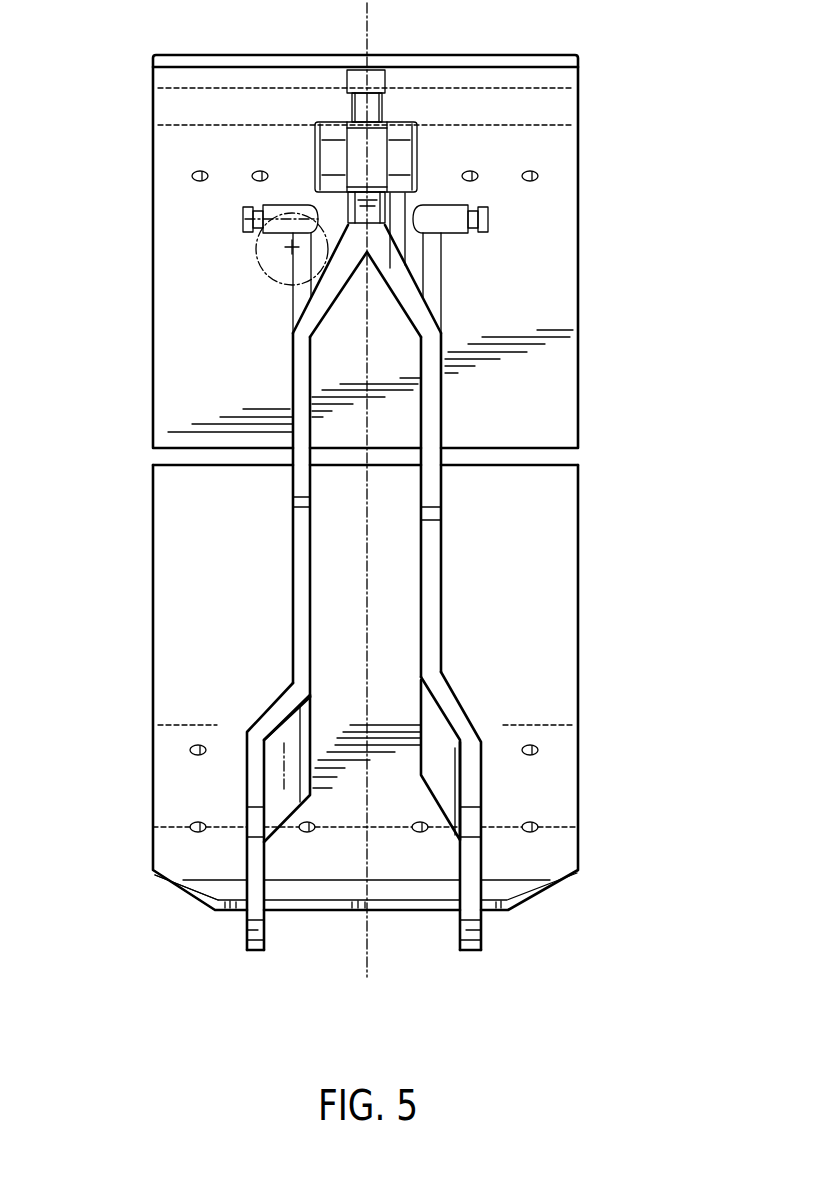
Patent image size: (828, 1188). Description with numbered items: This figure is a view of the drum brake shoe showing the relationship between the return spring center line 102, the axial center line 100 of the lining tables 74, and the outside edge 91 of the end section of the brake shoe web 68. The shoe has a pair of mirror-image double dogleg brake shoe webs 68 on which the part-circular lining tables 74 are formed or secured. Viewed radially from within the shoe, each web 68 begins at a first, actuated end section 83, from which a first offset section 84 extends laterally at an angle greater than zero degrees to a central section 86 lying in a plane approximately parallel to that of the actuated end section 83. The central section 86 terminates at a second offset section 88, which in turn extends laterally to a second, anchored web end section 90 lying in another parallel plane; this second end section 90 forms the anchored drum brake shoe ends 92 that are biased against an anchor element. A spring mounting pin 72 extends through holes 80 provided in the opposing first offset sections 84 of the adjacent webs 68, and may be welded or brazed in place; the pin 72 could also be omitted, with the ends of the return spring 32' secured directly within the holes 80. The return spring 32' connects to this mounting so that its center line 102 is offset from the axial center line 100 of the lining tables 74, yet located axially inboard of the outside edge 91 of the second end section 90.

The brake shoe web 68 is at (367, 590).
The spring mounting pin 72 is at (273, 207).
The lining table 74 is at (560, 222).
The hole 80 is at (320, 210).
The actuated end section 83 is at (358, 83).
The first offset section 84 is at (330, 295).
The central section 86 is at (300, 547).
The second offset section 88 is at (277, 715).
The anchored web end section 90 is at (255, 763).
The outside edge 91 is at (243, 860).
The anchored drum brake shoe end 92 is at (253, 887).
The axial center line 100 is at (370, 957).
The return spring center line 102 is at (287, 247).
The return spring 32' is at (254, 271).